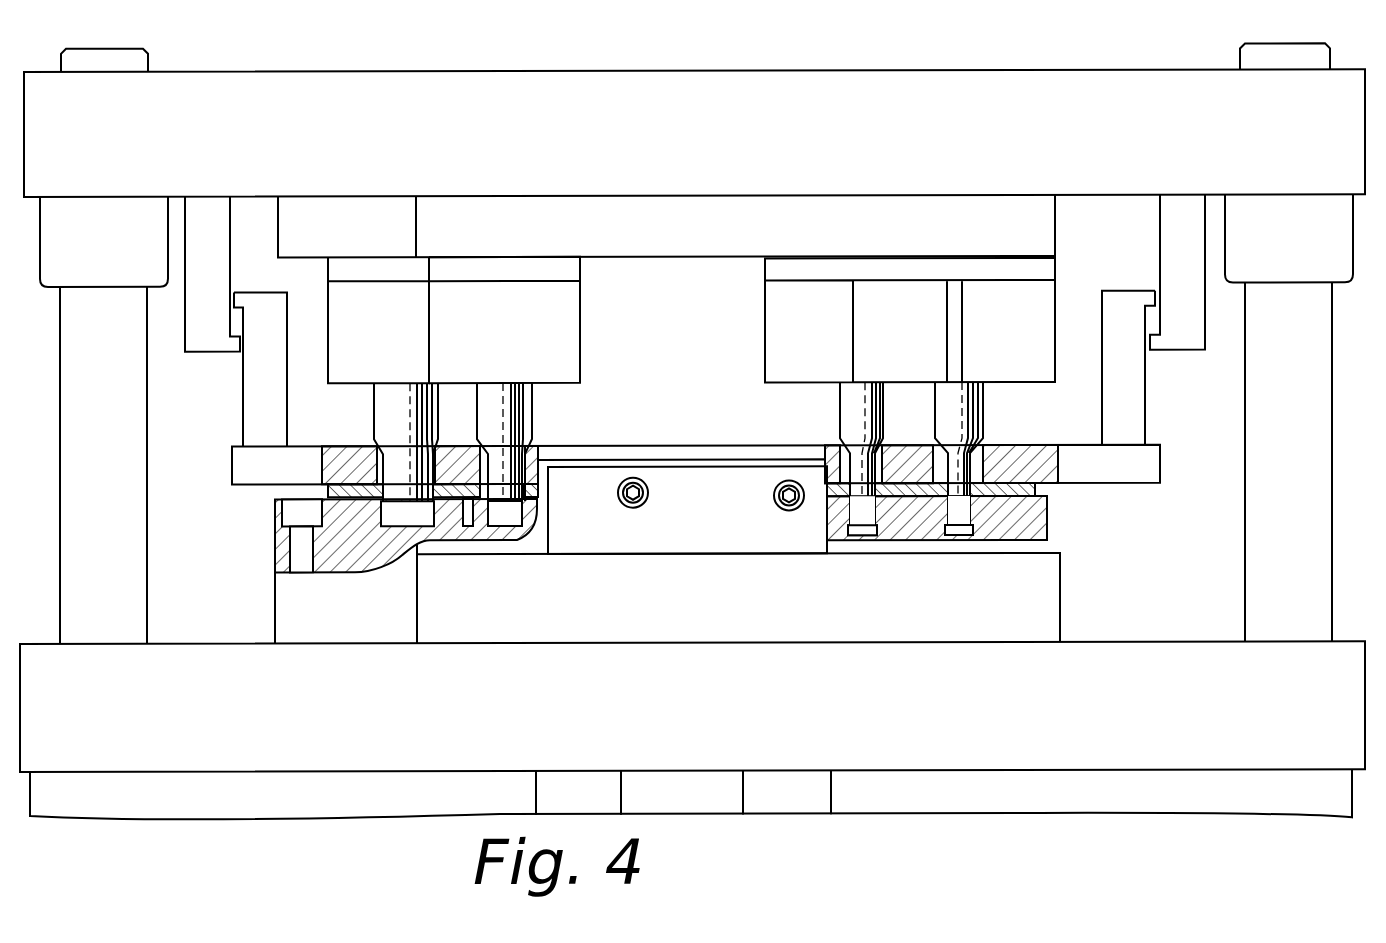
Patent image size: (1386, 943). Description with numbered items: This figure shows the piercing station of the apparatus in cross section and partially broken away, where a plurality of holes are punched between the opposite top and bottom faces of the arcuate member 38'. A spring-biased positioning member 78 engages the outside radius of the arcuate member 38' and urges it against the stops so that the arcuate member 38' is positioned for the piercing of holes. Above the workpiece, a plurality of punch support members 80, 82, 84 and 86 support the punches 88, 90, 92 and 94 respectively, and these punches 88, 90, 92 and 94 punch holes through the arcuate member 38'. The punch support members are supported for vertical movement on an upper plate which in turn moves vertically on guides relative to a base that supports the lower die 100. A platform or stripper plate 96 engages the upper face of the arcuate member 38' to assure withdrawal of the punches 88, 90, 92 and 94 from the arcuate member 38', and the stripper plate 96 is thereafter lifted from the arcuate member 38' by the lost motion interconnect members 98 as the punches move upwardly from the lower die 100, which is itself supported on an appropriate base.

The spring-biased positioning member 78 is at (694, 465).
The punch support member 80 is at (345, 296).
The punch support member 82 is at (565, 328).
The punch support member 84 is at (782, 308).
The punch support member 86 is at (1045, 300).
The punch 88 is at (392, 404).
The punch 90 is at (515, 412).
The punch 92 is at (853, 408).
The punch 94 is at (968, 409).
The stripper plate 96 is at (1145, 462).
The lost motion interconnect members 98 is at (252, 357).
The arcuate member 38' is at (739, 501).
The lower die 100 is at (1040, 513).